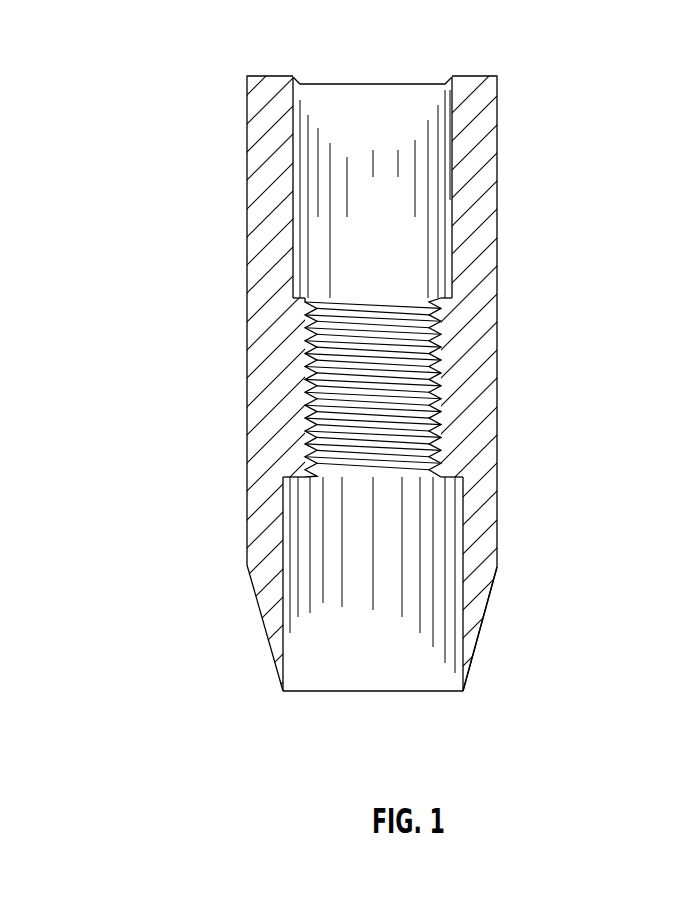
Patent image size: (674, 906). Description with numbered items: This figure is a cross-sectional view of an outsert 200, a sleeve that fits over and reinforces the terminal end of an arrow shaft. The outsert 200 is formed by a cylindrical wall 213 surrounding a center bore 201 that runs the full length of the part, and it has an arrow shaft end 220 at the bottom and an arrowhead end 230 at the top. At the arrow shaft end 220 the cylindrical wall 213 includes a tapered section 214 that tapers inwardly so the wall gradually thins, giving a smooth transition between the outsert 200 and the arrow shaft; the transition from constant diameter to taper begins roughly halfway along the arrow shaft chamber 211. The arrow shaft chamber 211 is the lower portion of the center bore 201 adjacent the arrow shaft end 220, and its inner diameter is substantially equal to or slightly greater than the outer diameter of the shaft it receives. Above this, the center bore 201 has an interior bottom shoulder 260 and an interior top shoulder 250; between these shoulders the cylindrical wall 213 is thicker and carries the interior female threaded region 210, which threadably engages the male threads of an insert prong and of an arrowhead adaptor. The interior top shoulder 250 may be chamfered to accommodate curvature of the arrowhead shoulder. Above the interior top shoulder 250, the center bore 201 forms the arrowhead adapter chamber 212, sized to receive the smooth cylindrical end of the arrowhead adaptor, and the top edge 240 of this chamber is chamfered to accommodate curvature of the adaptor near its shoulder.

The outsert 200 is at (574, 384).
The center bore 201 is at (328, 670).
The interior female threaded region 210 is at (303, 381).
The arrow shaft chamber 211 is at (298, 602).
The arrowhead adapter chamber 212 is at (413, 105).
The cylindrical wall 213 is at (475, 343).
The tapered section 214 is at (492, 583).
The arrow shaft end 220 is at (489, 714).
The arrowhead end 230 is at (228, 60).
The top edge 240 is at (268, 78).
The interior top shoulder 250 is at (302, 295).
The interior bottom shoulder 260 is at (298, 480).